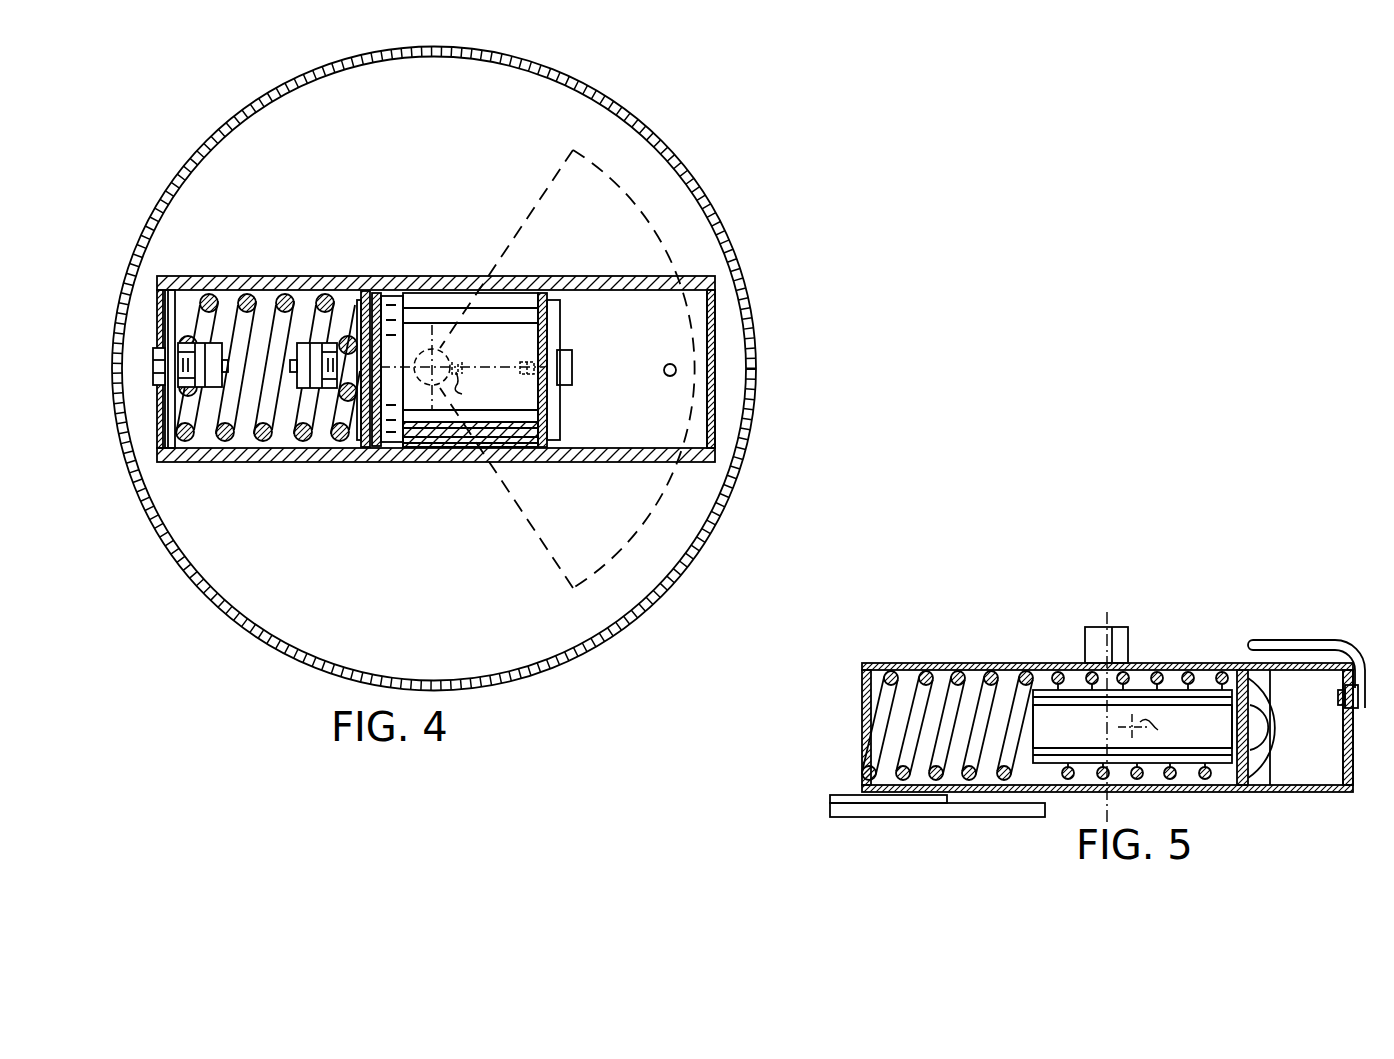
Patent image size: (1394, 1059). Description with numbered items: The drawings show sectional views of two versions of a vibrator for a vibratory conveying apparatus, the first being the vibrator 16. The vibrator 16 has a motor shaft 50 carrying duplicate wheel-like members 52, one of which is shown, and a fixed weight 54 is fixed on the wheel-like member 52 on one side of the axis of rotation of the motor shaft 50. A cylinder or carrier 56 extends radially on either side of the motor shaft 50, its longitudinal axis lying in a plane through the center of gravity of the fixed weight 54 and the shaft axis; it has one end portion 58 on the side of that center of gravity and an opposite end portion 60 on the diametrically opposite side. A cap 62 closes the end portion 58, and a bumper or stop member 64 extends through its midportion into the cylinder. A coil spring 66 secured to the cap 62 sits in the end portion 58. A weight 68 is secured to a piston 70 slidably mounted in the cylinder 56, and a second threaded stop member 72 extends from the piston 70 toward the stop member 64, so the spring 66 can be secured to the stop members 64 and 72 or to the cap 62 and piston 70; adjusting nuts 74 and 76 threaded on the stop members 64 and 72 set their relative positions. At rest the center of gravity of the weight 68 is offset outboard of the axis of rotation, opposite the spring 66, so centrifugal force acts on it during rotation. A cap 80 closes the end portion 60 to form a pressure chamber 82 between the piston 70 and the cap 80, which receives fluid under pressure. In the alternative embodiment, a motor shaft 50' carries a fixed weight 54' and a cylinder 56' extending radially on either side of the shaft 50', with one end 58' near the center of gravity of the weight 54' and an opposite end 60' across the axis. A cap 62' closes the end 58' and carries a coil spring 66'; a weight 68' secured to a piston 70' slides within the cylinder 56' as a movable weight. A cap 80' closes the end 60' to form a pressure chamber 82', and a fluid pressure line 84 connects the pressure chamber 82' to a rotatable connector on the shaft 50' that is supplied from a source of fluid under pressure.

In FIG. 4, the first vibrator 16 is at (722, 160).
In FIG. 4, the motor shaft 50 is at (462, 317).
In FIG. 4, the wheel-like member 52 is at (618, 105).
In FIG. 4, the fixed weight 54 is at (614, 369).
In FIG. 4, the cylinder or carrier 56 is at (485, 336).
In FIG. 4, the one end portion 58 is at (436, 343).
In FIG. 4, the opposite end portion 60 is at (753, 338).
In FIG. 4, the cap 62 is at (125, 399).
In FIG. 4, the bumper or stop member 64 is at (240, 355).
In FIG. 4, the coil spring 66 is at (268, 333).
In FIG. 4, the weight 68 is at (470, 461).
In FIG. 4, the piston 70 is at (378, 400).
In FIG. 4, the second threaded stop member 72 is at (366, 345).
In FIG. 4, the adjusting nut 74 is at (222, 380).
In FIG. 4, the adjusting nut 76 is at (310, 385).
In FIG. 4, the cap 80 is at (758, 369).
In FIG. 4, the pressure chamber 82 is at (633, 400).
In FIG. 5, the motor shaft 50' is at (1136, 708).
In FIG. 5, the fixed weight 54' is at (937, 828).
In FIG. 5, the cylinder 56' is at (1132, 686).
In FIG. 5, the one end 58' is at (1107, 693).
In FIG. 5, the opposite end 60' is at (1330, 689).
In FIG. 5, the cap 62' is at (834, 727).
In FIG. 5, the coil spring 66' is at (947, 766).
In FIG. 5, the weight 68' is at (1132, 671).
In FIG. 5, the piston 70' is at (1258, 689).
In FIG. 5, the cap 80' is at (1368, 728).
In FIG. 5, the pressure chamber 82' is at (1306, 753).
In FIG. 5, the fluid pressure line 84 is at (1360, 652).